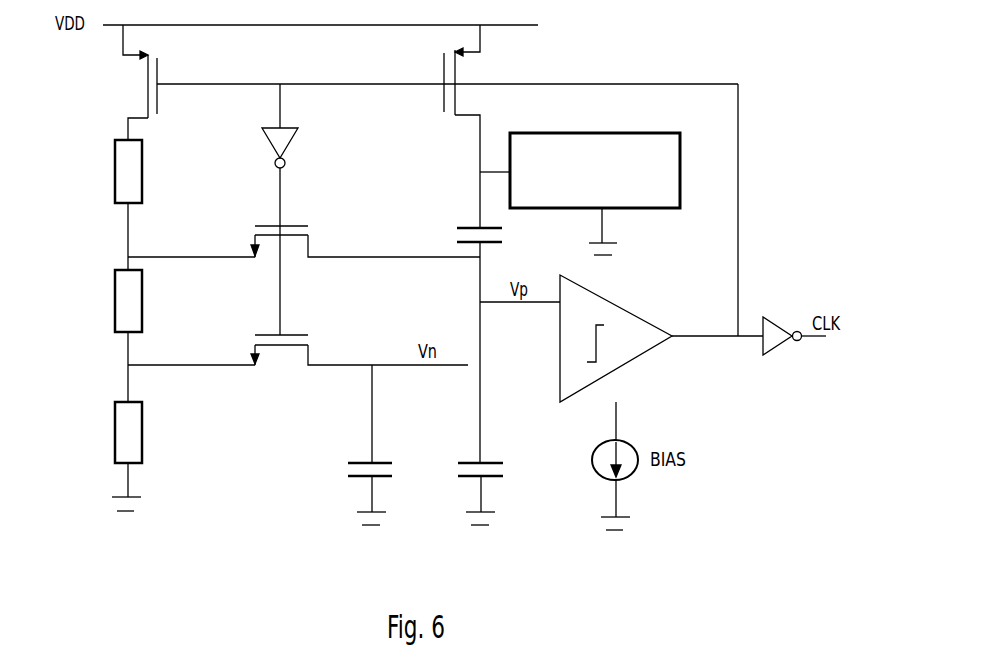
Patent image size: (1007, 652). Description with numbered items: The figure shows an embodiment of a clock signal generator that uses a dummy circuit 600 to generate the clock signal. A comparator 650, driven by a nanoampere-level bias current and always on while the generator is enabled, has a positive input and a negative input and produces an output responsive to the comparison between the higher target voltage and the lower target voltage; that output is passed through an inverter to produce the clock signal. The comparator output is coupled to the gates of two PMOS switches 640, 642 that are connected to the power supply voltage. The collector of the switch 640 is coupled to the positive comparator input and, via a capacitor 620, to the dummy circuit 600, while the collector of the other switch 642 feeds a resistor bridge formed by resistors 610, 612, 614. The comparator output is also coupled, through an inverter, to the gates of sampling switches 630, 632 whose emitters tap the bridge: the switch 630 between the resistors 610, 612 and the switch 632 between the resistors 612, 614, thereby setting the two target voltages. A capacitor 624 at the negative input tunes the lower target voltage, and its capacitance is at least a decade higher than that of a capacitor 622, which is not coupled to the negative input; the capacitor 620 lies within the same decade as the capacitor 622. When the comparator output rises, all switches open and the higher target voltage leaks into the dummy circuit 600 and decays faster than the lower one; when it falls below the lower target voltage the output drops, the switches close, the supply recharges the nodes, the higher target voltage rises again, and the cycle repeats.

The dummy circuit 600 is at (608, 169).
The resistor 610 is at (115, 165).
The resistor 612 is at (115, 289).
The resistor 614 is at (115, 420).
The capacitor 620 is at (459, 228).
The capacitor 622 is at (461, 462).
The capacitor 624 is at (351, 462).
The sampling switch 630 is at (255, 226).
The sampling switch 632 is at (255, 335).
The switch 640 is at (442, 60).
The switch 642 is at (147, 94).
The comparator 650 is at (559, 333).